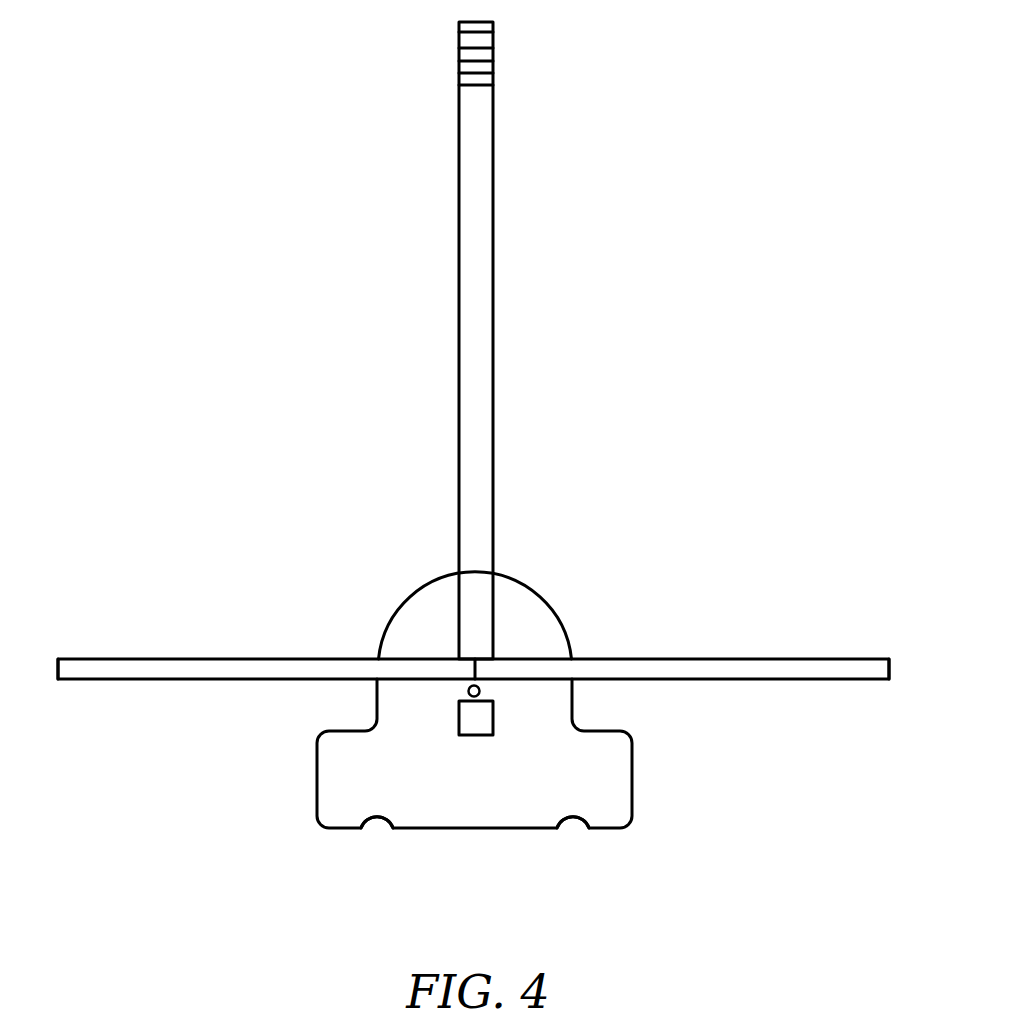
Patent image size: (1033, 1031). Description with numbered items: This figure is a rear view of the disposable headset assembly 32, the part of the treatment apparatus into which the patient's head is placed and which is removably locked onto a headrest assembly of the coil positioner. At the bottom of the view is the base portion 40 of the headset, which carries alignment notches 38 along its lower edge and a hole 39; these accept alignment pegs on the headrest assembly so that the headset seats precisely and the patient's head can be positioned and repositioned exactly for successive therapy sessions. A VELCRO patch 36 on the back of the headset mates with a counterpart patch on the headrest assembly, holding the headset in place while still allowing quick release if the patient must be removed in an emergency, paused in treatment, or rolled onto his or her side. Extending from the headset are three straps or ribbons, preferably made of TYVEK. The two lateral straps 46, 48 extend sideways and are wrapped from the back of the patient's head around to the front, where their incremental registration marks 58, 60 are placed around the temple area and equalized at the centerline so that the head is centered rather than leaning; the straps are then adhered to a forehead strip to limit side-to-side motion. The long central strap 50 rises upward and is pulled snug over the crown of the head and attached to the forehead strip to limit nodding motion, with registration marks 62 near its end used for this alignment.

The disposable headset assembly 32 is at (722, 398).
The VELCRO patch 36 is at (459, 713).
The alignment notches 38 is at (378, 826).
The holes 39 is at (481, 688).
The base portion 40 is at (317, 765).
The lateral strap 46 is at (707, 659).
The lateral strap 48 is at (210, 659).
The strap 50 is at (458, 312).
The incremental registration marks 58 is at (866, 659).
The incremental registration marks 60 is at (85, 659).
The registration marks 62 is at (460, 31).